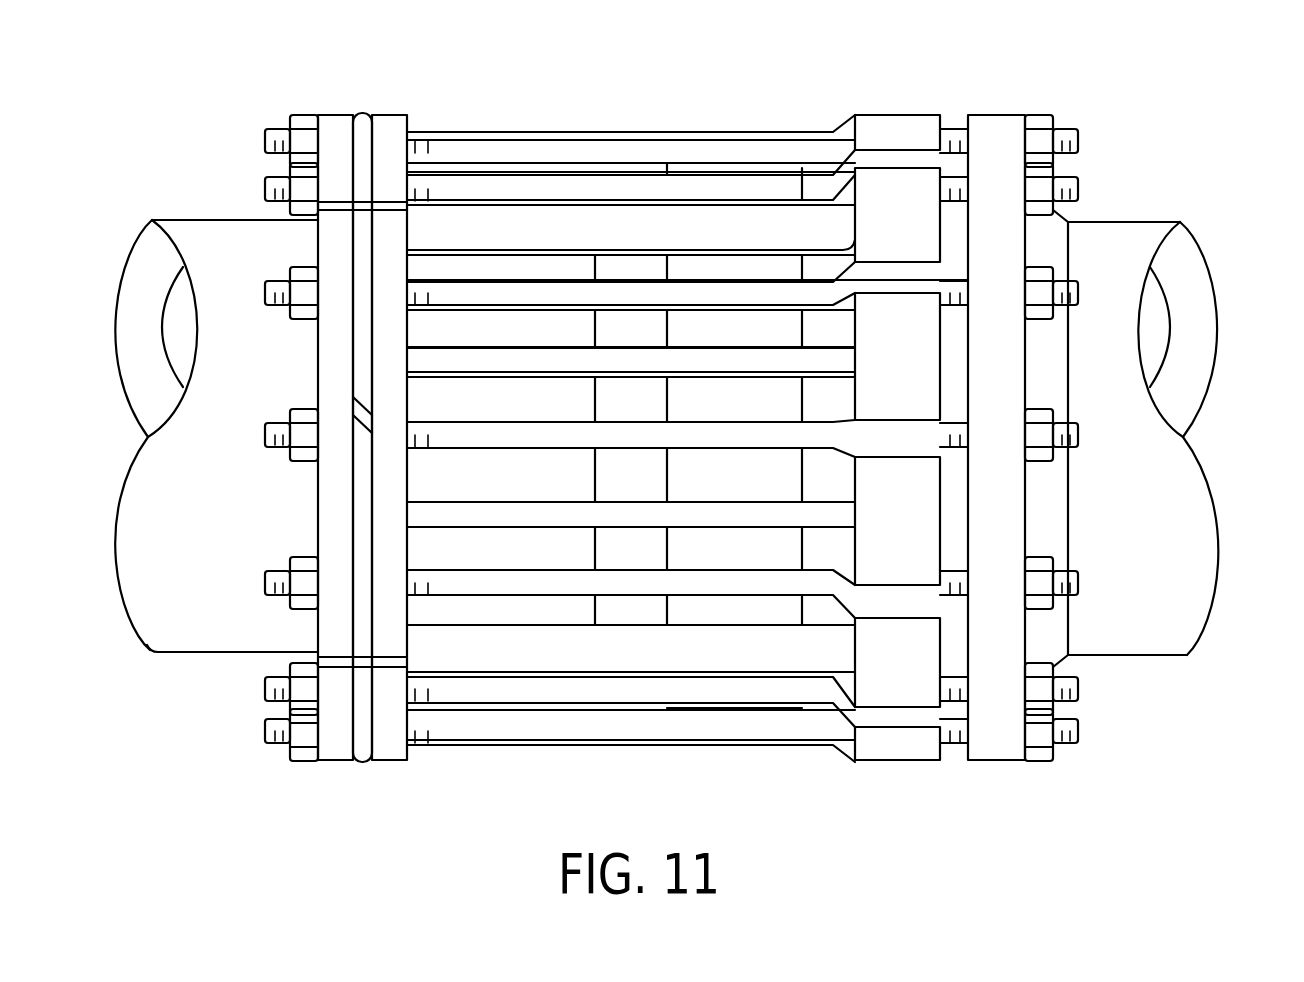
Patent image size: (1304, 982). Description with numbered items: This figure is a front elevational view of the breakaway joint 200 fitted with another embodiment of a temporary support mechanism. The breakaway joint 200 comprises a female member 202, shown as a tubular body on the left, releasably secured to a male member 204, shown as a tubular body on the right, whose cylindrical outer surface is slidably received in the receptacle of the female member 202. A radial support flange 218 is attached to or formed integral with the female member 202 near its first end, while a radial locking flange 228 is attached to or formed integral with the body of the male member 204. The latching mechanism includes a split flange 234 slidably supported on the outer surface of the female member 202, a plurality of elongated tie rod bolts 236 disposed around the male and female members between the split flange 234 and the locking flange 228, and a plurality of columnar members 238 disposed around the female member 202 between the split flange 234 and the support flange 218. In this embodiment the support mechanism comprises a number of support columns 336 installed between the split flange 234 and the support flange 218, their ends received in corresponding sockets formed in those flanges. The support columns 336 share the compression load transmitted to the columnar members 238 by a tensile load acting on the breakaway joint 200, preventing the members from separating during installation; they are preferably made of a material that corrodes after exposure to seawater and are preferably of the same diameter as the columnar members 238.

The breakaway joint 200 is at (1185, 77).
The female member 202 is at (196, 217).
The male member 204 is at (1130, 218).
The support flange 218 is at (892, 114).
The locking flange 228 is at (1000, 114).
The split flange 234 is at (385, 114).
The tie rod bolts 236 is at (702, 182).
The columnar members 238 is at (592, 145).
The support columns 336 is at (525, 212).